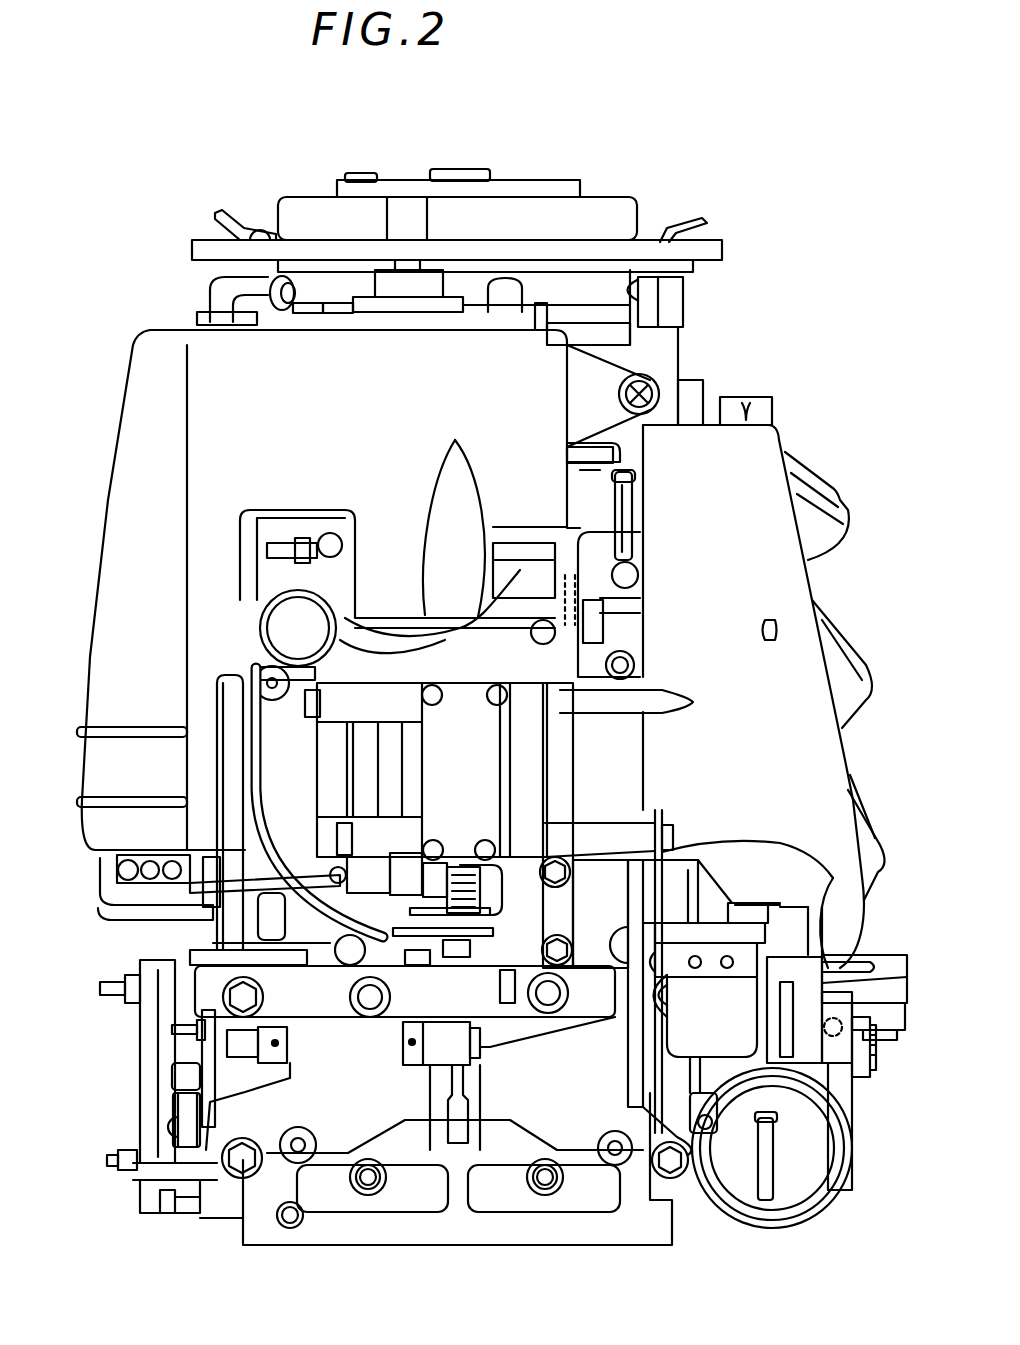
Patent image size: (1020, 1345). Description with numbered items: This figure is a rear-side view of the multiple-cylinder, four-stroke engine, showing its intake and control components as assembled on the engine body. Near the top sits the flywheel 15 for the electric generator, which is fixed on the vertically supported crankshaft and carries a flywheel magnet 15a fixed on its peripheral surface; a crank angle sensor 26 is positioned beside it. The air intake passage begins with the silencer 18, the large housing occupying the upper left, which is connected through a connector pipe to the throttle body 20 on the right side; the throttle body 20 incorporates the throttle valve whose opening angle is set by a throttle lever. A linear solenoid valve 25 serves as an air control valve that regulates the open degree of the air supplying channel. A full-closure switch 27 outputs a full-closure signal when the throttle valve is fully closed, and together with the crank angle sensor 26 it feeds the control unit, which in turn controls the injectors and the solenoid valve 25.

The flywheel 15 is at (577, 285).
The flywheel magnet 15a is at (597, 277).
The crank angle sensor 26 is at (685, 305).
The silencer 18 is at (108, 551).
The full-closure switch 27 is at (400, 865).
The linear solenoid valve 25 is at (577, 580).
The throttle body 20 is at (497, 780).